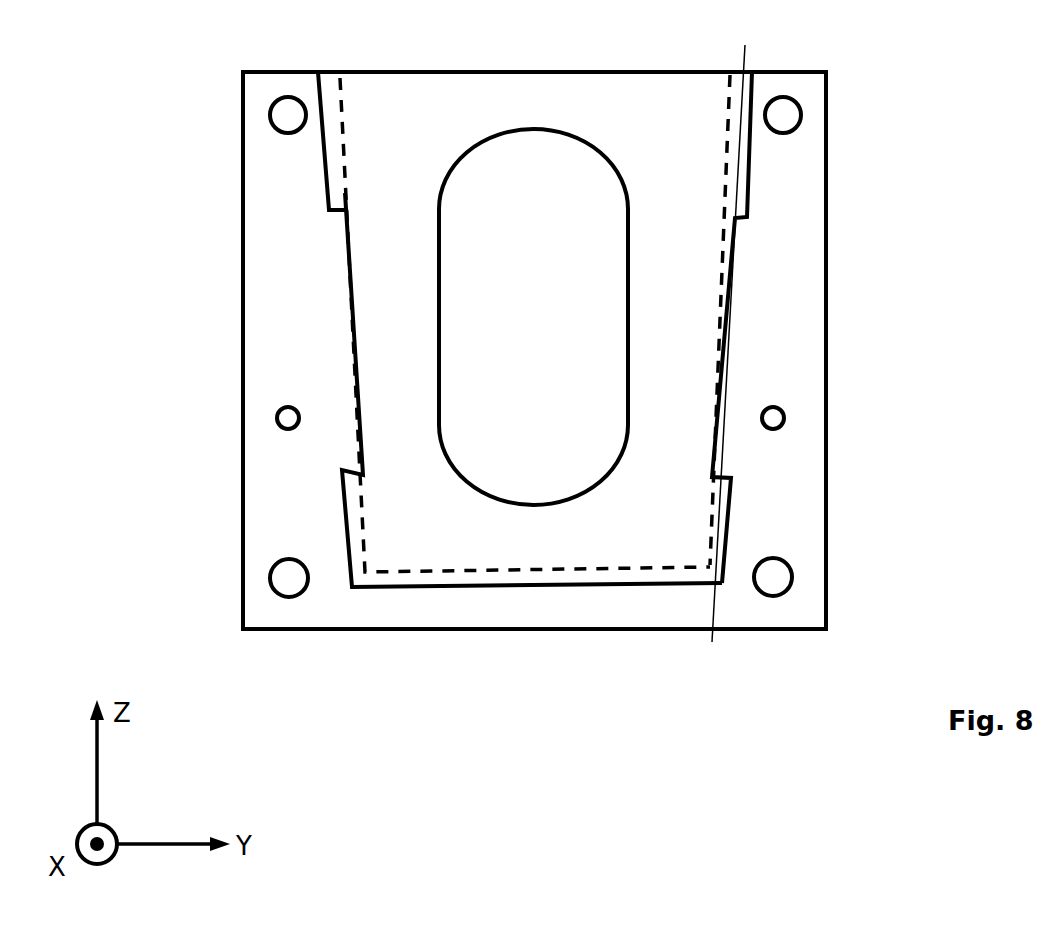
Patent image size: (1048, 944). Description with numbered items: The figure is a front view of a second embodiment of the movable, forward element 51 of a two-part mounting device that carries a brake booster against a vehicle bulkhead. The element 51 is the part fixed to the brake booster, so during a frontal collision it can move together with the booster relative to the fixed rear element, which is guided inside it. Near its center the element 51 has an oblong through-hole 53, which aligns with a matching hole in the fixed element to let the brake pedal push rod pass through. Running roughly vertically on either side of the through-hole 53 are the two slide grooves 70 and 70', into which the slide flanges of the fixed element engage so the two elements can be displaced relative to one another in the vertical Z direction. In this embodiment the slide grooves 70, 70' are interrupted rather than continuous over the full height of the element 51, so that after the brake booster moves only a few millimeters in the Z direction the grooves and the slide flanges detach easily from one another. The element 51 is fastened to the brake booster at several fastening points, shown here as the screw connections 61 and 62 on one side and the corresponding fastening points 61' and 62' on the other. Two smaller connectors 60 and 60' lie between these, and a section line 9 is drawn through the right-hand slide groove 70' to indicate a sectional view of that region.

The forward element 51 is at (828, 278).
The through-hole 53 is at (463, 158).
The slide groove 70 is at (520, 329).
The slide groove 70' is at (704, 327).
The section line IX-IX 9 is at (727, 345).
The screw connection 61 is at (217, 95).
The fastening point 61' is at (871, 96).
The connector 60 is at (216, 393).
The connector 60' is at (856, 439).
The screw connection 62 is at (220, 587).
The fastening point 62' is at (866, 600).